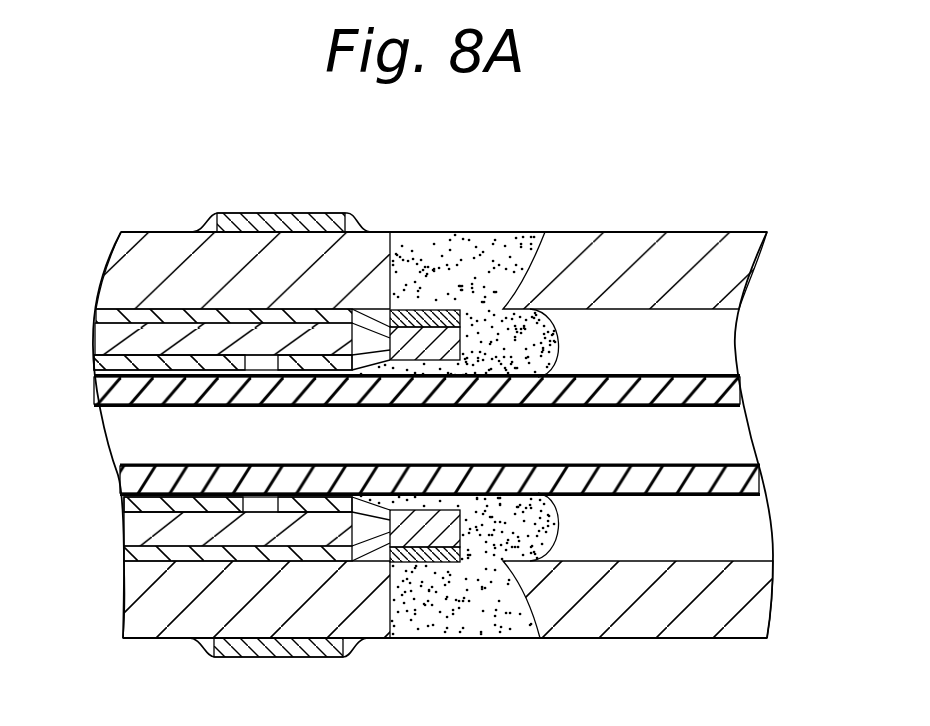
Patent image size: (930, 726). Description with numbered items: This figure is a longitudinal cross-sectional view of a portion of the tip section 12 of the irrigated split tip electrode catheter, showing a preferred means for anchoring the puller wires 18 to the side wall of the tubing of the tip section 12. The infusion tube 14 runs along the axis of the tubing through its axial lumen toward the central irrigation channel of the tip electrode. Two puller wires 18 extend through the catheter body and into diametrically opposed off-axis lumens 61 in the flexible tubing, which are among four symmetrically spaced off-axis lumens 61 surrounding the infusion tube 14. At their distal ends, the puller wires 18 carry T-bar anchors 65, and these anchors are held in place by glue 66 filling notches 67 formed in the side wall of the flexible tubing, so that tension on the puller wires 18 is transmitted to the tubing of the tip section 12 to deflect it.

The tip section 12 is at (712, 230).
The infusion tube 14 is at (818, 248).
The puller wires 18 is at (107, 340).
The off-axis lumens 61 is at (813, 352).
The T-bar anchors 65 is at (457, 565).
The glue 66 is at (508, 250).
The notches 67 is at (393, 275).